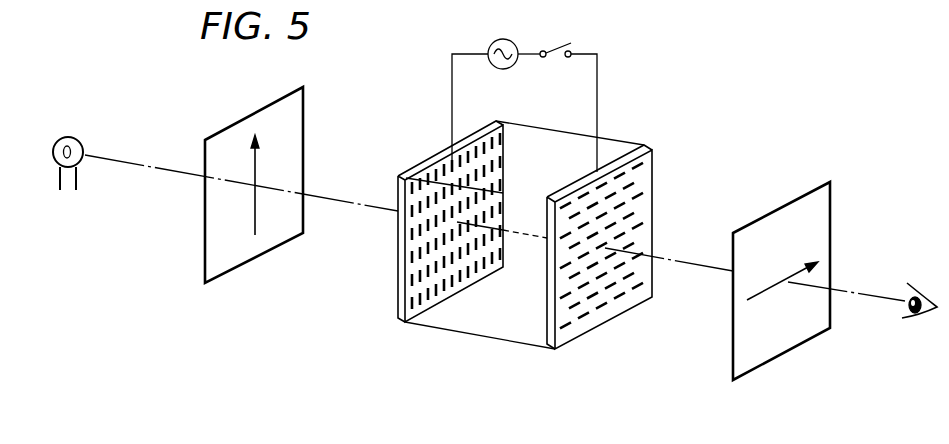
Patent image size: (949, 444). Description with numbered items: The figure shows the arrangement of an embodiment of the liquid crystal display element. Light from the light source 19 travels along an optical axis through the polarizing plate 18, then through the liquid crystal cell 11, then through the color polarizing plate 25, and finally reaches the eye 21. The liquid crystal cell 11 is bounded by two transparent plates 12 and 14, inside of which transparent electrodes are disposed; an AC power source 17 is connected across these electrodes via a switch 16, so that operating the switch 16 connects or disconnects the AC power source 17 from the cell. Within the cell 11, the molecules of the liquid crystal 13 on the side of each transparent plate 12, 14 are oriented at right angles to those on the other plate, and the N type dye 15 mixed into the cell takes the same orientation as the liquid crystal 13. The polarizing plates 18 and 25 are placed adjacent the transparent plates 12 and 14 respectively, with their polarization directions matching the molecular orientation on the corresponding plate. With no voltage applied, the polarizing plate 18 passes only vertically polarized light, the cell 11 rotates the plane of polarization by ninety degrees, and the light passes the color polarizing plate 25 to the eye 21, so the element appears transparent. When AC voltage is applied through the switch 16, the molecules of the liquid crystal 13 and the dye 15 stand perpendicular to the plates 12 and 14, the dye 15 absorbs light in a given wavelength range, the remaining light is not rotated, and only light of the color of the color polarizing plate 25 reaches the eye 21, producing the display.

The liquid crystal cell 11 is at (471, 363).
The transparent plate 12 is at (398, 269).
The liquid crystal 13 is at (415, 277).
The transparent plate 14 is at (557, 340).
The N type dye 15 is at (417, 297).
The switch 16 is at (557, 43).
The AC power source 17 is at (494, 18).
The polarizing plate 18 is at (227, 128).
The light source 19 is at (71, 136).
The eye 21 is at (915, 290).
The polarizing plate 25 is at (765, 215).